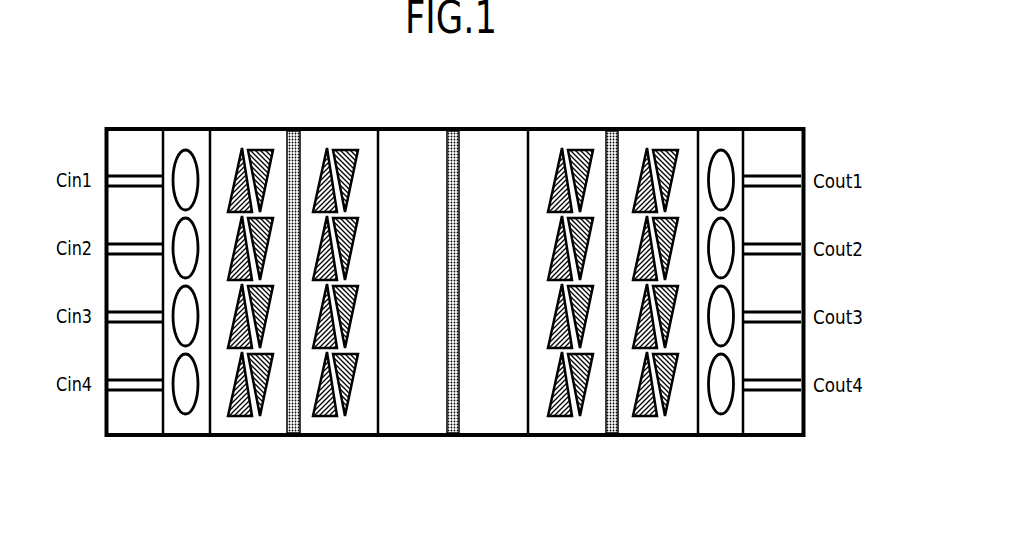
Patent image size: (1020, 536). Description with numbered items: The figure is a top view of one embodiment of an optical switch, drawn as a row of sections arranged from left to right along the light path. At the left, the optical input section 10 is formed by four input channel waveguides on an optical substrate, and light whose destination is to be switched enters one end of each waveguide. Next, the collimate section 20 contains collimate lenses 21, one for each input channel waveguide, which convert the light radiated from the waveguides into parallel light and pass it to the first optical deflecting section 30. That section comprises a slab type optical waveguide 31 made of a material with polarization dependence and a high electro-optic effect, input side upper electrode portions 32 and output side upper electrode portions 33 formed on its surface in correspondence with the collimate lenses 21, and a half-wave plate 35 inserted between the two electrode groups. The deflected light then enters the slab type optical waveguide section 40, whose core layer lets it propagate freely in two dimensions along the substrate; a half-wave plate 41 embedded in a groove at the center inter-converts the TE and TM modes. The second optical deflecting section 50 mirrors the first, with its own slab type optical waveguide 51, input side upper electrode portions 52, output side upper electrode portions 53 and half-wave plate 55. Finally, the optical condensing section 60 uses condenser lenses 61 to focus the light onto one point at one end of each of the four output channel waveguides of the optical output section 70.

The optical input section 10 is at (107, 116).
The collimate section 20 is at (173, 289).
The collimate lens 21 is at (185, 424).
The first optical deflecting section 30 is at (306, 289).
The slab type optical waveguide 31 is at (367, 425).
The input side upper electrode portions 32 is at (252, 424).
The output side upper electrode portions 33 is at (332, 424).
The half-wave plate 35 is at (293, 437).
The slab type optical waveguide section 40 is at (453, 293).
The half-wave plate 41 is at (451, 438).
The second optical deflecting section 50 is at (600, 289).
The slab type optical waveguide 51 is at (537, 423).
The input side upper electrode portions 52 is at (573, 424).
The output side upper electrode portions 53 is at (653, 424).
The half-wave plate 55 is at (613, 437).
The optical condensing section 60 is at (733, 289).
The condenser lens 61 is at (720, 424).
The optical output section 70 is at (744, 116).